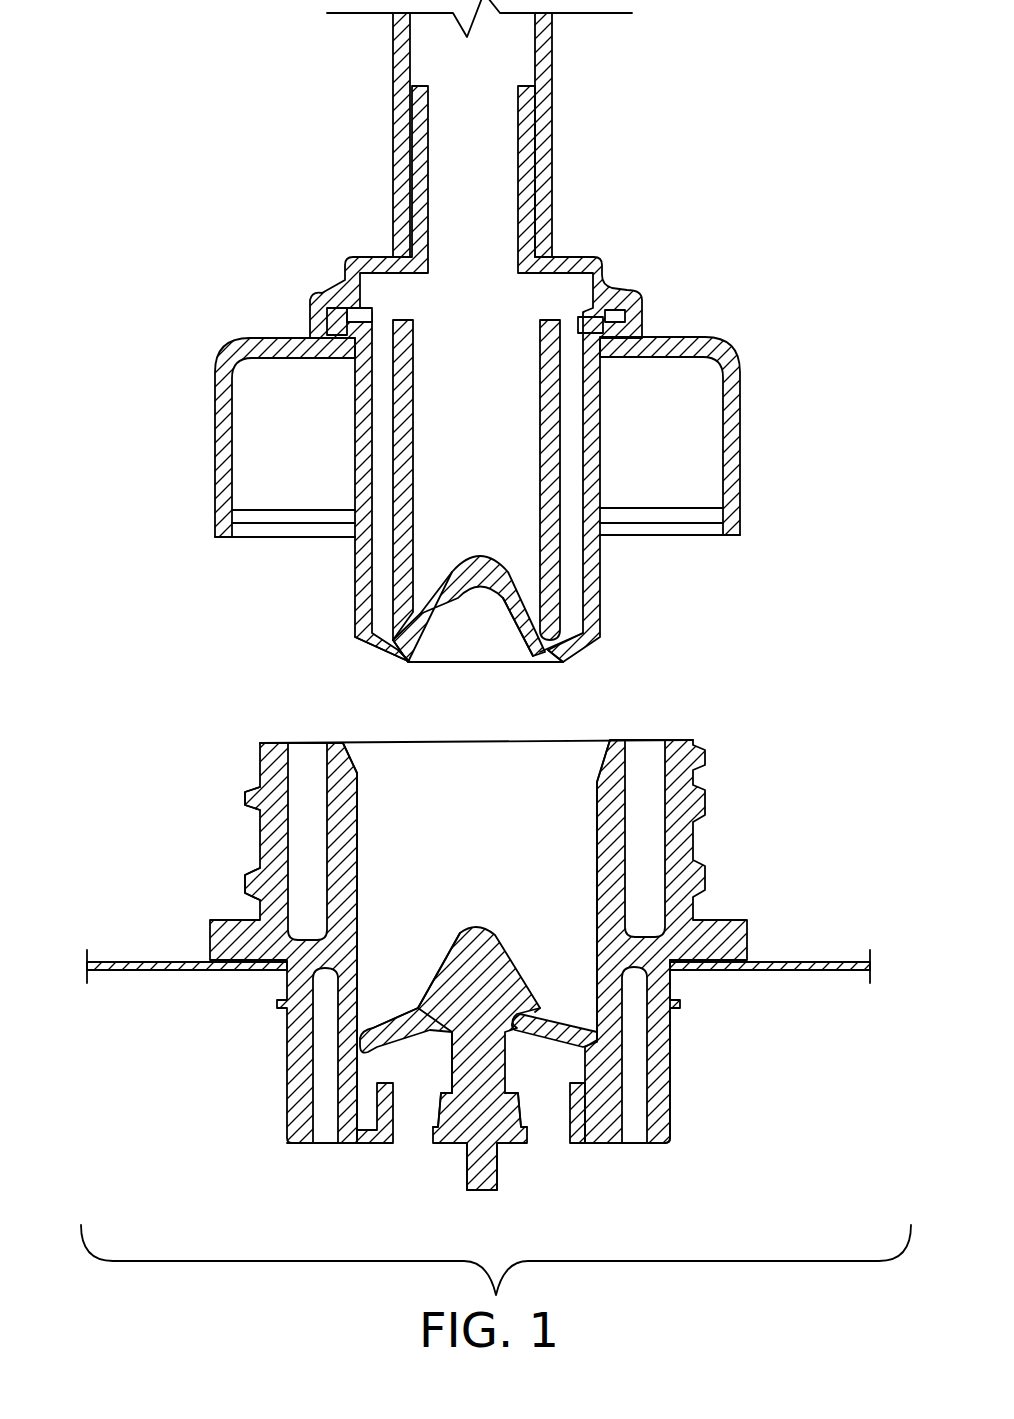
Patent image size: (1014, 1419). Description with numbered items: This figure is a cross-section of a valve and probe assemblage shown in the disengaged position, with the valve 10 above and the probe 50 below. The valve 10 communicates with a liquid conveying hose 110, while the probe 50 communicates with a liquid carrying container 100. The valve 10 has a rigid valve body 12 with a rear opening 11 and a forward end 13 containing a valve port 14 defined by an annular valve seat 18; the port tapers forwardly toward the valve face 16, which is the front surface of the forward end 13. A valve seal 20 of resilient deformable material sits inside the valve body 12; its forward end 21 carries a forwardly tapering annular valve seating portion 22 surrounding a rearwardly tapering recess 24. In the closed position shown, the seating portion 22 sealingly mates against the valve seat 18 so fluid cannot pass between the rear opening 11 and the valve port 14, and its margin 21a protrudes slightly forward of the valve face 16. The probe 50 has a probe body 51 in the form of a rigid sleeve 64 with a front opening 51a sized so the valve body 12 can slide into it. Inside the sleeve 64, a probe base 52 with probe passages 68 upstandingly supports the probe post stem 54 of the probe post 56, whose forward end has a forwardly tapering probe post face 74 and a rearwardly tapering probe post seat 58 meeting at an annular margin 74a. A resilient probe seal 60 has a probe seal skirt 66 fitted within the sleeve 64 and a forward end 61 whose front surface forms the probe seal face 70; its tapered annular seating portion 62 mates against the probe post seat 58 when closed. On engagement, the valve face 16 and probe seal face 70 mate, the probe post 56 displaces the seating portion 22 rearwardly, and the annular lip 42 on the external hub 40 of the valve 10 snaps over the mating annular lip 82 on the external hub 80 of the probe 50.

The valve 10 is at (755, 305).
The rear opening 11 is at (458, 103).
The liquid conveying hose 110 is at (550, 33).
The valve body 12 is at (597, 547).
The forward end 13 is at (362, 640).
The valve port 14 is at (467, 662).
The valve face 16 is at (547, 652).
The valve seat 18 is at (530, 637).
The valve seal 20 is at (398, 542).
The forward end 21 is at (422, 573).
The margin 21a is at (412, 662).
The valve seating portion 22 is at (573, 660).
The recess 24 is at (537, 660).
The external hub 40 is at (740, 437).
The annular lip 42 is at (720, 508).
The probe 50 is at (733, 923).
The probe body 51 is at (600, 787).
The front opening 51a is at (413, 743).
The probe base 52 is at (505, 1145).
The probe post stem 54 is at (490, 1187).
The probe post 56 is at (457, 1057).
The probe post seat 58 is at (510, 1017).
The probe seal 60 is at (603, 1133).
The forward end 61 is at (393, 1030).
The seating portion 62 is at (543, 1007).
The sleeve 64 is at (352, 943).
The probe seal skirt 66 is at (360, 1143).
The probe passages 68 is at (412, 1143).
The probe seal face 70 is at (548, 1020).
The probe post face 74 is at (442, 970).
The annular margin 74a is at (417, 1007).
The external hub 80 is at (247, 797).
The annular lip 82 is at (248, 893).
The liquid carrying container 100 is at (807, 953).